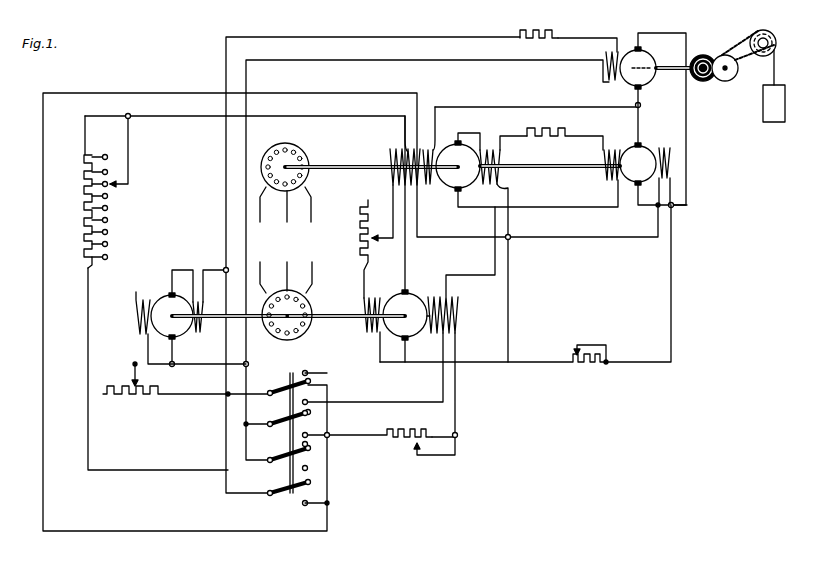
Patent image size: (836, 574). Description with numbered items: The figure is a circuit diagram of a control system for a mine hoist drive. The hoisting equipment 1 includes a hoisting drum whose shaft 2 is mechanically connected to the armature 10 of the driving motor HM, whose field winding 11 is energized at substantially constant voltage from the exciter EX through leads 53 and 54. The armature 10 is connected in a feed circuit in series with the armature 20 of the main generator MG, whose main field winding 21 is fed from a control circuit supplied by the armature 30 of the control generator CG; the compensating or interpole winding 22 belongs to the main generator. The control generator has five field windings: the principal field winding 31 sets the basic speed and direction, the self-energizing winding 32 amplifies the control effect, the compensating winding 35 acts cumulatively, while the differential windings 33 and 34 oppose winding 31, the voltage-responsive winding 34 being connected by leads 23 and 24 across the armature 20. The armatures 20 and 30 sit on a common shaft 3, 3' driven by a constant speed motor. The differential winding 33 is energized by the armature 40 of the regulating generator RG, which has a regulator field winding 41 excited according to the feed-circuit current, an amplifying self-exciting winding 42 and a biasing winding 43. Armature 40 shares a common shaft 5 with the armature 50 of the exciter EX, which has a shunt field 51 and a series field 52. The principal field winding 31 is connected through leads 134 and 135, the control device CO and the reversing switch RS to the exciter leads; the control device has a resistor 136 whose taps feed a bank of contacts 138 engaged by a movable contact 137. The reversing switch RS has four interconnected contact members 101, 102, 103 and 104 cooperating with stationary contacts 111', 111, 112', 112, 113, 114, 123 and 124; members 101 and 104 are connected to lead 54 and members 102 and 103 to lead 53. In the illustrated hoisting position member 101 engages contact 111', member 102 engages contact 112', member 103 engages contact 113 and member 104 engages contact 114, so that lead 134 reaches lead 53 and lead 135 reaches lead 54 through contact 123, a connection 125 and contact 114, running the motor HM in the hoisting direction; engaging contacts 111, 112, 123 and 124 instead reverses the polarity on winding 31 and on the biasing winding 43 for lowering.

The hoisting equipment 1 is at (737, 76).
The shaft 2 is at (672, 70).
The common shaft 3 is at (371, 159).
The shaft coupling generator CG to machine MG 3' is at (550, 176).
The common shaft 5 is at (330, 326).
The armature 10 is at (650, 84).
The field winding 11 is at (606, 58).
The armature 20 is at (670, 171).
The main field winding 21 is at (604, 172).
The compensating winding 22 is at (672, 152).
The lead 23 is at (584, 238).
The lead 24 is at (516, 112).
The armature 30 is at (452, 196).
The principal field winding 31 is at (404, 138).
The self-energizing field winding 32 is at (486, 136).
The differential field winding 33 is at (388, 156).
The differential field winding 34 is at (439, 145).
The compensating field winding 35 is at (508, 182).
The armature 40 is at (398, 298).
The regulator field winding 41 is at (442, 296).
The amplifying self-exciting winding 42 is at (378, 334).
The biasing winding 43 is at (458, 310).
The armature 50 is at (190, 317).
The shunt field 51 is at (187, 325).
The series field 52 is at (229, 319).
The lead 53 is at (399, 62).
The lead 54 is at (396, 34).
The switch contact member 101 is at (290, 390).
The switch contact member 102 is at (286, 422).
The switch contact member 103 is at (288, 456).
The switch contact member 104 is at (288, 492).
The stationary contact 111 is at (333, 390).
The stationary contact 111' is at (322, 368).
The stationary contact 112 is at (333, 433).
The stationary contact 112' is at (335, 413).
The stationary contact 113 is at (308, 446).
The stationary contact 114 is at (310, 490).
The stationary contact 123 is at (308, 468).
The stationary contact 124 is at (306, 504).
The connection 125 is at (308, 480).
The lead 134 is at (318, 96).
The lead 135 is at (345, 118).
The resistor 136 is at (82, 228).
The movable contact 137 is at (110, 196).
The bank of contacts 138 is at (118, 148).